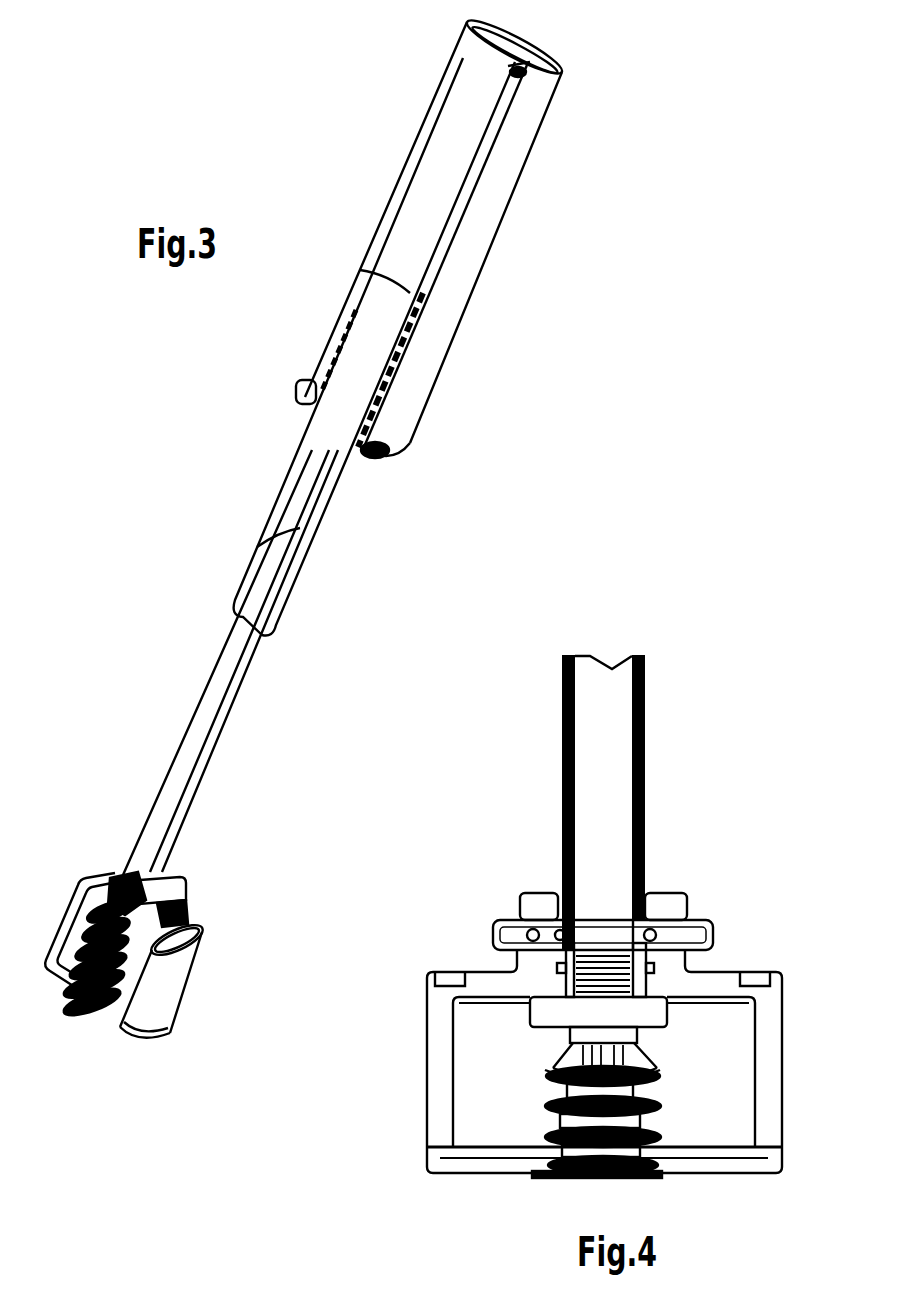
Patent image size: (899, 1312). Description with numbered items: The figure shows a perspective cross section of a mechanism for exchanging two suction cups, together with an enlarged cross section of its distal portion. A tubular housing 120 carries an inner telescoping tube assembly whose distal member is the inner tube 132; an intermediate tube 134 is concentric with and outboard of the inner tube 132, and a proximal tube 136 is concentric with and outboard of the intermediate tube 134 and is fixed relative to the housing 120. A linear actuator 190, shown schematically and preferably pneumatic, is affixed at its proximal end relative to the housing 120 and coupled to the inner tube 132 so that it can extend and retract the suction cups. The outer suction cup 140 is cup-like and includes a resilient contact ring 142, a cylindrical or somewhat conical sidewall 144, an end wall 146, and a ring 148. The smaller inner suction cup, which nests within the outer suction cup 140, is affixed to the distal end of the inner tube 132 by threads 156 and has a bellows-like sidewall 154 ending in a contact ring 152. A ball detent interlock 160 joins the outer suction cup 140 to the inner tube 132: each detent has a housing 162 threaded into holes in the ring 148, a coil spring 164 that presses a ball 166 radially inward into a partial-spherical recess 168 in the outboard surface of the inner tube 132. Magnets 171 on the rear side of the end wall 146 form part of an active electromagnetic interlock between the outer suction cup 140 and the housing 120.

In FIG. 3, the tubular housing 120 is at (502, 215).
In FIG. 3, the linear actuator 190 is at (452, 161).
In FIG. 3, the proximal tube 136 is at (496, 95).
In FIG. 3, the intermediate tube 134 is at (347, 478).
In FIG. 3, the inner tube 132 is at (213, 751).
In FIG. 4, the inner tube 132 is at (647, 725).
In FIG. 3, the magnets 171 is at (88, 871).
In FIG. 4, the magnets 171 is at (757, 976).
In FIG. 3, the end wall 146 is at (185, 925).
In FIG. 4, the end wall 146 is at (702, 981).
In FIG. 3, the sidewall 144 is at (197, 968).
In FIG. 4, the sidewall 144 is at (437, 1032).
In FIG. 3, the outer suction cup 140 is at (180, 1005).
In FIG. 3, the resilient contact ring 142 is at (138, 1033).
In FIG. 4, the resilient contact ring 142 is at (437, 1158).
In FIG. 4, the interlock 160 is at (713, 933).
In FIG. 4, the housing 162 is at (510, 933).
In FIG. 4, the coil spring 164 is at (510, 935).
In FIG. 4, the ball 166 is at (556, 918).
In FIG. 4, the ring 148 is at (665, 905).
In FIG. 4, the recess 168 is at (567, 948).
In FIG. 4, the threads 156 is at (652, 1011).
In FIG. 4, the bellows-like sidewall 154 is at (640, 1121).
In FIG. 4, the contact ring 152 is at (616, 1176).